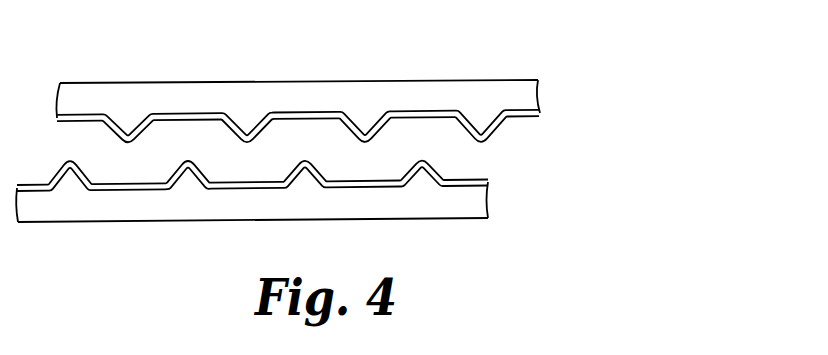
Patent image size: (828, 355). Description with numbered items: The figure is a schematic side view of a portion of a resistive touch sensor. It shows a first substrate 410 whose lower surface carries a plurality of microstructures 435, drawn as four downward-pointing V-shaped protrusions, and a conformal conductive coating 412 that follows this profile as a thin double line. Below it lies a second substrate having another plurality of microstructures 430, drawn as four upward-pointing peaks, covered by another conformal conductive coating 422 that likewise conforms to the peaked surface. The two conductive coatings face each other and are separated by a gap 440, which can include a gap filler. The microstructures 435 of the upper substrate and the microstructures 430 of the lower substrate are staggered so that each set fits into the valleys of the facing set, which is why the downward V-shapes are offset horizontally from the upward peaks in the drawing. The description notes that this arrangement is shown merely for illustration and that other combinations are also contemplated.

The first substrate 410 is at (520, 95).
The conformal conductive coating 412 is at (539, 116).
The microstructures 435 is at (245, 122).
The gap 440 is at (315, 134).
The conformal conductive coating 422 is at (488, 183).
The microstructures 430 is at (187, 182).